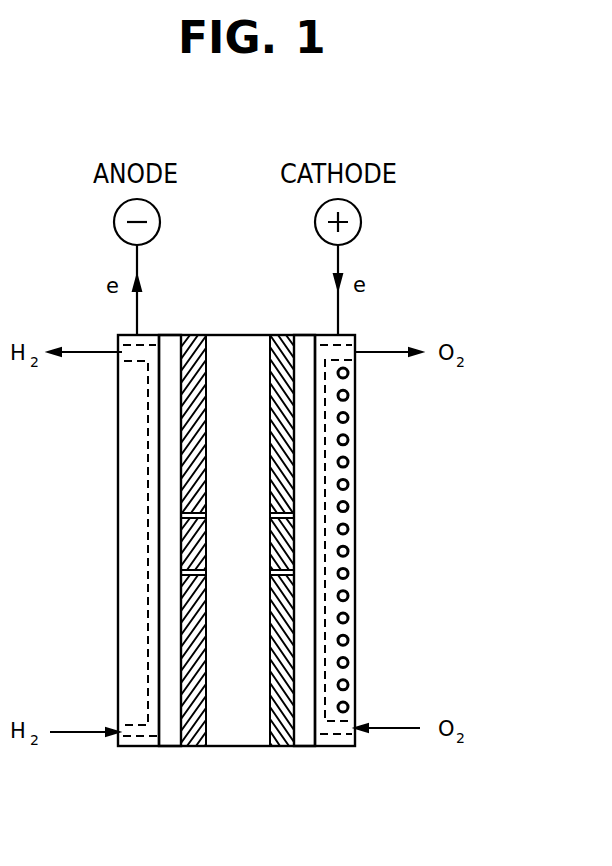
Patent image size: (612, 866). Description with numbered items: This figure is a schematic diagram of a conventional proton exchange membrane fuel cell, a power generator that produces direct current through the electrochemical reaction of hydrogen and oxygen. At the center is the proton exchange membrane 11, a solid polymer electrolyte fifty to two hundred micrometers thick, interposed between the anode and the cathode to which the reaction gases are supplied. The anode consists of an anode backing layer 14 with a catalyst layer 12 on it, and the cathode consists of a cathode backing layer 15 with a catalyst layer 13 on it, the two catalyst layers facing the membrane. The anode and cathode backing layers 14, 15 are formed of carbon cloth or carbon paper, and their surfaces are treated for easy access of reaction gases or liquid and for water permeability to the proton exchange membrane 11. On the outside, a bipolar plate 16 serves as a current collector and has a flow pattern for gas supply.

The proton exchange membrane 11 is at (237, 746).
The catalyst layer 12 is at (190, 735).
The catalyst layer 13 is at (278, 735).
The anode backing layer 14 is at (171, 453).
The cathode backing layer 15 is at (307, 453).
The bipolar plate 16 is at (135, 519).